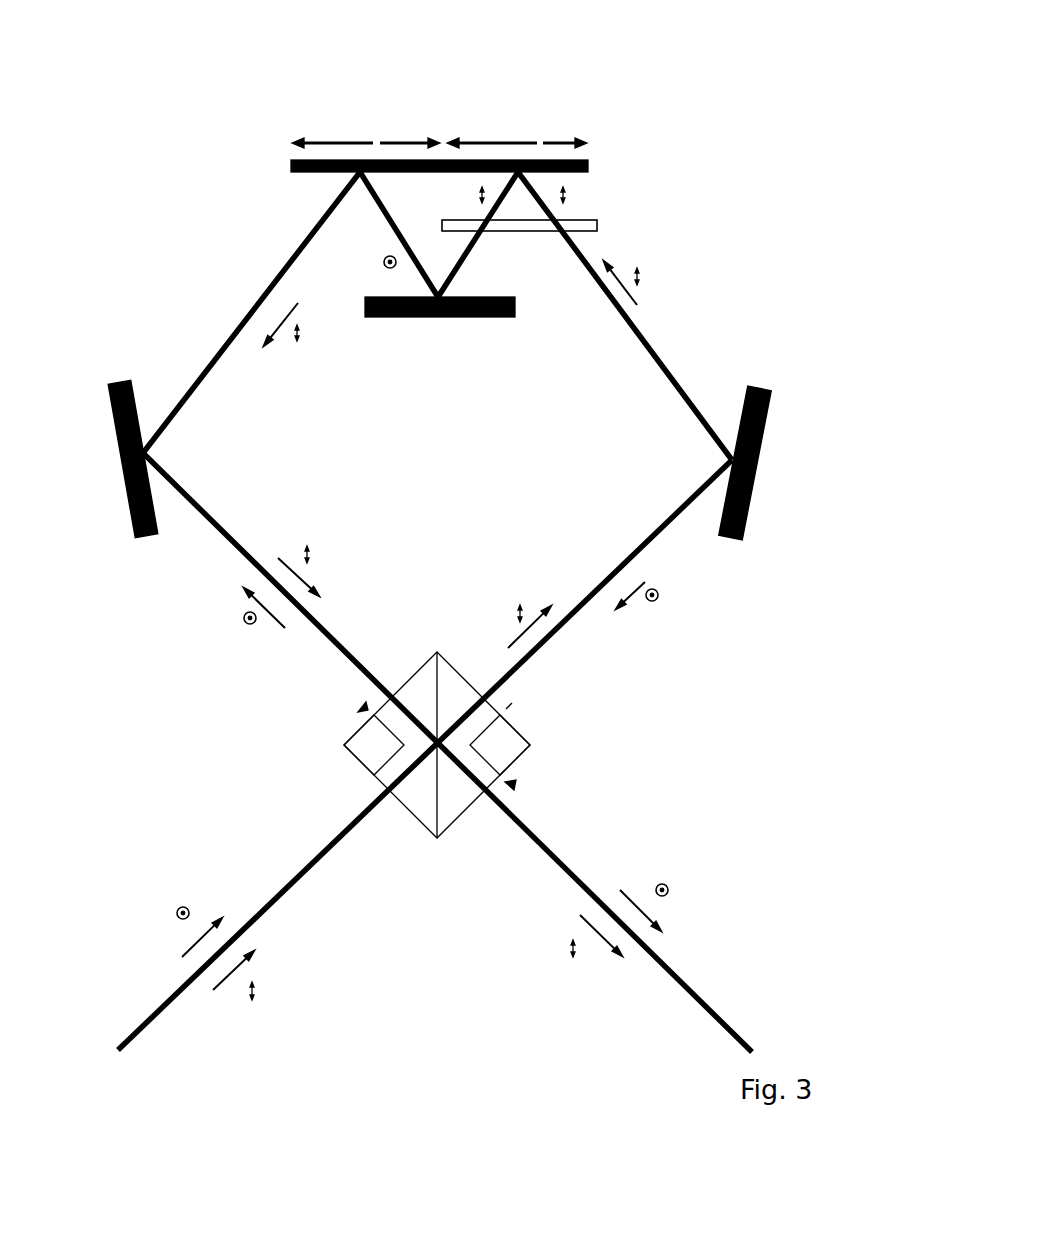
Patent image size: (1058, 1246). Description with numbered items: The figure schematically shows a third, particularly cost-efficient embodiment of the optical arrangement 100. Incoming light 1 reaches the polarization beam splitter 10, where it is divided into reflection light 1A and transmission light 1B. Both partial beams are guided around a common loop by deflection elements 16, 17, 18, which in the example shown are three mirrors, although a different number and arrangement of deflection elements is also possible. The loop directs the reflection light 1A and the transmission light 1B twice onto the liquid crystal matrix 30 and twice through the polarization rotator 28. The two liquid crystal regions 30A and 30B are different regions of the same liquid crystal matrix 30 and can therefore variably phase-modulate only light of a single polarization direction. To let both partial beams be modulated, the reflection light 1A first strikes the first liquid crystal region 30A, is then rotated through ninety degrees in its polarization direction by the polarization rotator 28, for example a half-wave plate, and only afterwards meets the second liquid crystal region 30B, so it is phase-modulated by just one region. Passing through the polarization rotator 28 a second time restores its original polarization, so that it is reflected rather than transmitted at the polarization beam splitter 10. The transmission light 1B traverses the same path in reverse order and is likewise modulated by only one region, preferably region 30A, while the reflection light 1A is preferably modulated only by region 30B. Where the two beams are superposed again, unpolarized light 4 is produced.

The optical arrangement 100 is at (760, 46).
The light 1 is at (316, 863).
The reflection light 1A is at (272, 623).
The transmission light 1B is at (515, 635).
The unpolarized light 4 is at (673, 967).
The polarization beam splitter 10 is at (342, 747).
The deflection element 16 is at (122, 497).
The deflection element 17 is at (765, 415).
The deflection element 18 is at (475, 318).
The polarization rotator 28 is at (597, 220).
The liquid crystal matrix 30 is at (290, 167).
The first liquid crystal region 30A is at (330, 138).
The second liquid crystal region 30B is at (502, 138).